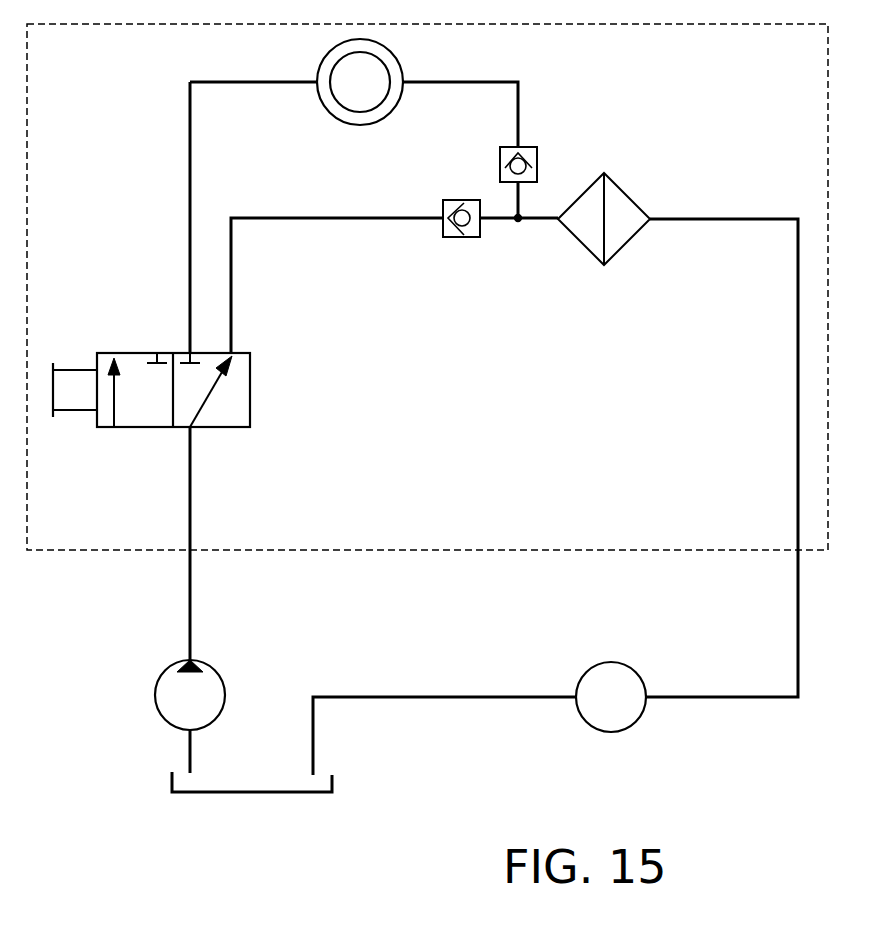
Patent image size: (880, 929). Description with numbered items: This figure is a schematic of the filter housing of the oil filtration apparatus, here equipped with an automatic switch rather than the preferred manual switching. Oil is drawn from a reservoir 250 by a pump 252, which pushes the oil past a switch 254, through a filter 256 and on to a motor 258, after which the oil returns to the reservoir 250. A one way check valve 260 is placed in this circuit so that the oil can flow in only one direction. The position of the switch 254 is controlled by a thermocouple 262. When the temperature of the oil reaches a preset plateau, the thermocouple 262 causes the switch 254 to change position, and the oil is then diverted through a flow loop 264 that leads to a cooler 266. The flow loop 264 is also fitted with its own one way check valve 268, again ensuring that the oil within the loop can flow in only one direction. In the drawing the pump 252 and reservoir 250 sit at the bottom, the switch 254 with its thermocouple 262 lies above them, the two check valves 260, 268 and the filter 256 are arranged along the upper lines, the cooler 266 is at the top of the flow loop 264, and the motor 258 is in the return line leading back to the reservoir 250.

The reservoir 250 is at (172, 786).
The pump 252 is at (156, 702).
The switch 254 is at (250, 400).
The filter 256 is at (636, 206).
The motor 258 is at (640, 715).
The one way check valve 260 is at (472, 238).
The thermocouple 262 is at (73, 410).
The flow loop 264 is at (190, 200).
The cooler 266 is at (318, 64).
The one way check valve 268 is at (500, 172).